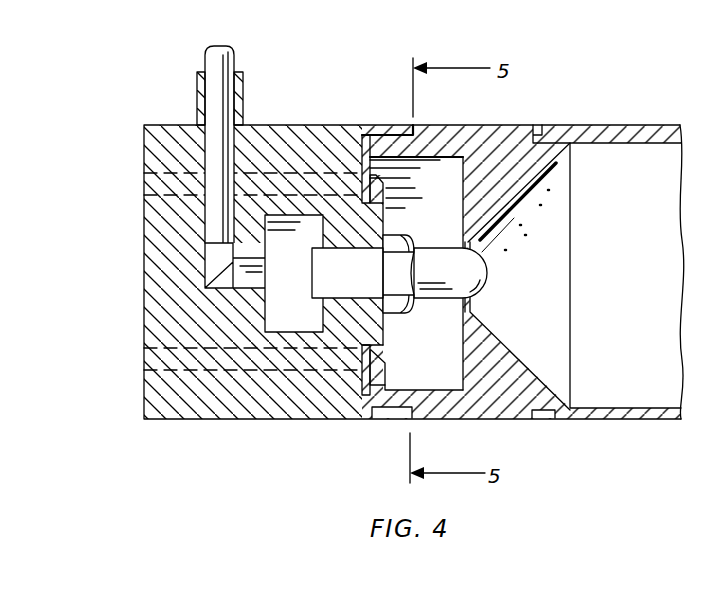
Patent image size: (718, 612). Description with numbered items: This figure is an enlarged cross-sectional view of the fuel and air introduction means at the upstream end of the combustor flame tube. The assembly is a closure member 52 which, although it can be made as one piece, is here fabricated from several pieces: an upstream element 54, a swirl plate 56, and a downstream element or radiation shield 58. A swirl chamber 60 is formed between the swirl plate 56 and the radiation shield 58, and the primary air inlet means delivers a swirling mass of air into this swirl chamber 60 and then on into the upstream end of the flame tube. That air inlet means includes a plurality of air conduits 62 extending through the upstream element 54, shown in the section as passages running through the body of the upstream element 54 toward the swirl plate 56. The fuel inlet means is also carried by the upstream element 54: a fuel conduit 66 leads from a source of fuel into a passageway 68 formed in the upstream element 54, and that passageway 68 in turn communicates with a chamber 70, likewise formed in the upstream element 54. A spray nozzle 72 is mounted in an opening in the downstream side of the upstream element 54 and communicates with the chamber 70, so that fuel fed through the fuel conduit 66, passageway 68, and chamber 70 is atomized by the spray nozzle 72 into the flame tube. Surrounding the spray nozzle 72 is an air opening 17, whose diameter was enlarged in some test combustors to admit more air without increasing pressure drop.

The air opening 17 is at (466, 246).
The closure member 52 is at (128, 229).
The upstream element 54 is at (144, 283).
The swirl plate 56 is at (362, 138).
The radiation shield 58 is at (485, 140).
The swirl chamber 60 is at (437, 357).
The air conduits 62 is at (144, 364).
The fuel conduit 66 is at (236, 48).
The passageway 68 is at (229, 263).
The chamber 70 is at (300, 279).
The spray nozzle 72 is at (458, 279).